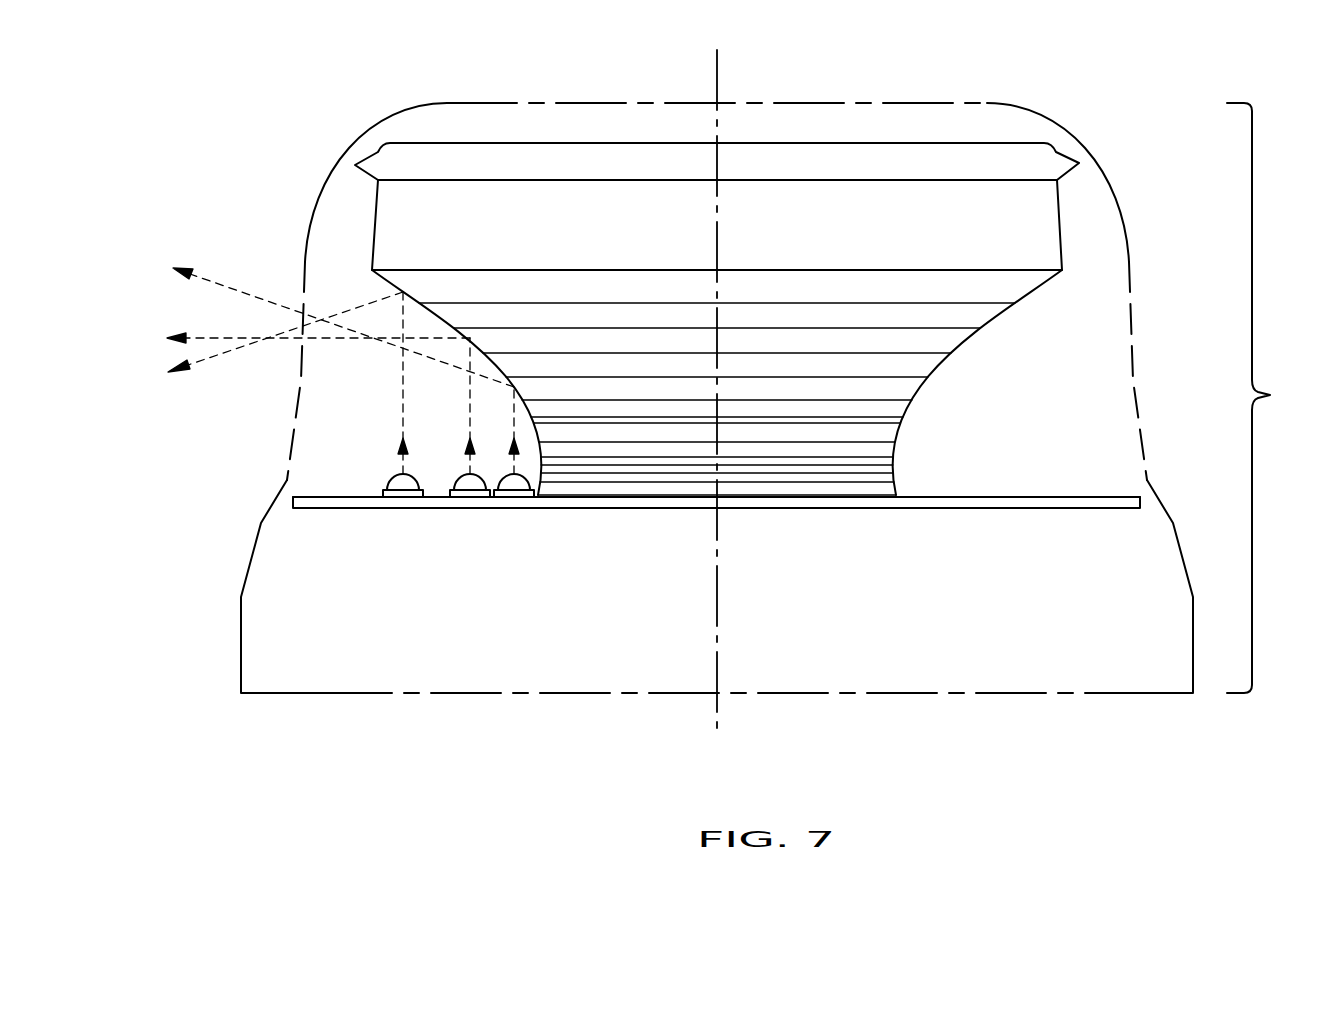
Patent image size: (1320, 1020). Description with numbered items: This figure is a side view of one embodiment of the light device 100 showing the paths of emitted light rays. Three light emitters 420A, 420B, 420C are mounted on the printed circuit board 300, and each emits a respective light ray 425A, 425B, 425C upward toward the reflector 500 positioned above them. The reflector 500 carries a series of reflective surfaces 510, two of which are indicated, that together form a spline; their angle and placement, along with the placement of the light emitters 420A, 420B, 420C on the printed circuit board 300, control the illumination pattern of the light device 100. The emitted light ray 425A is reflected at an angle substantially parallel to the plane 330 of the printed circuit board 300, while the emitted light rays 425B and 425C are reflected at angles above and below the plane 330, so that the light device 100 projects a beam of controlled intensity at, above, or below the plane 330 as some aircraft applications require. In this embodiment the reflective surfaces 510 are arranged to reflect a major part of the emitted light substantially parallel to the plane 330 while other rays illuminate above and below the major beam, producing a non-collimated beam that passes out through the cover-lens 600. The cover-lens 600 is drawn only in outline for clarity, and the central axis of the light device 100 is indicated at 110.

The light device 100 is at (1272, 398).
The central axis 110 is at (717, 72).
The printed circuit board 300 is at (1042, 500).
The plane of the printed circuit board 330 is at (957, 495).
The light emitter 420A is at (470, 497).
The light emitter 420B is at (514, 497).
The light emitter 420C is at (403, 497).
The emitted light ray 425A is at (197, 337).
The emitted light ray 425B is at (215, 283).
The emitted light ray 425C is at (213, 355).
The reflector 500 is at (1047, 158).
The reflective surfaces 510 is at (903, 385).
The cover-lens 600 is at (343, 135).